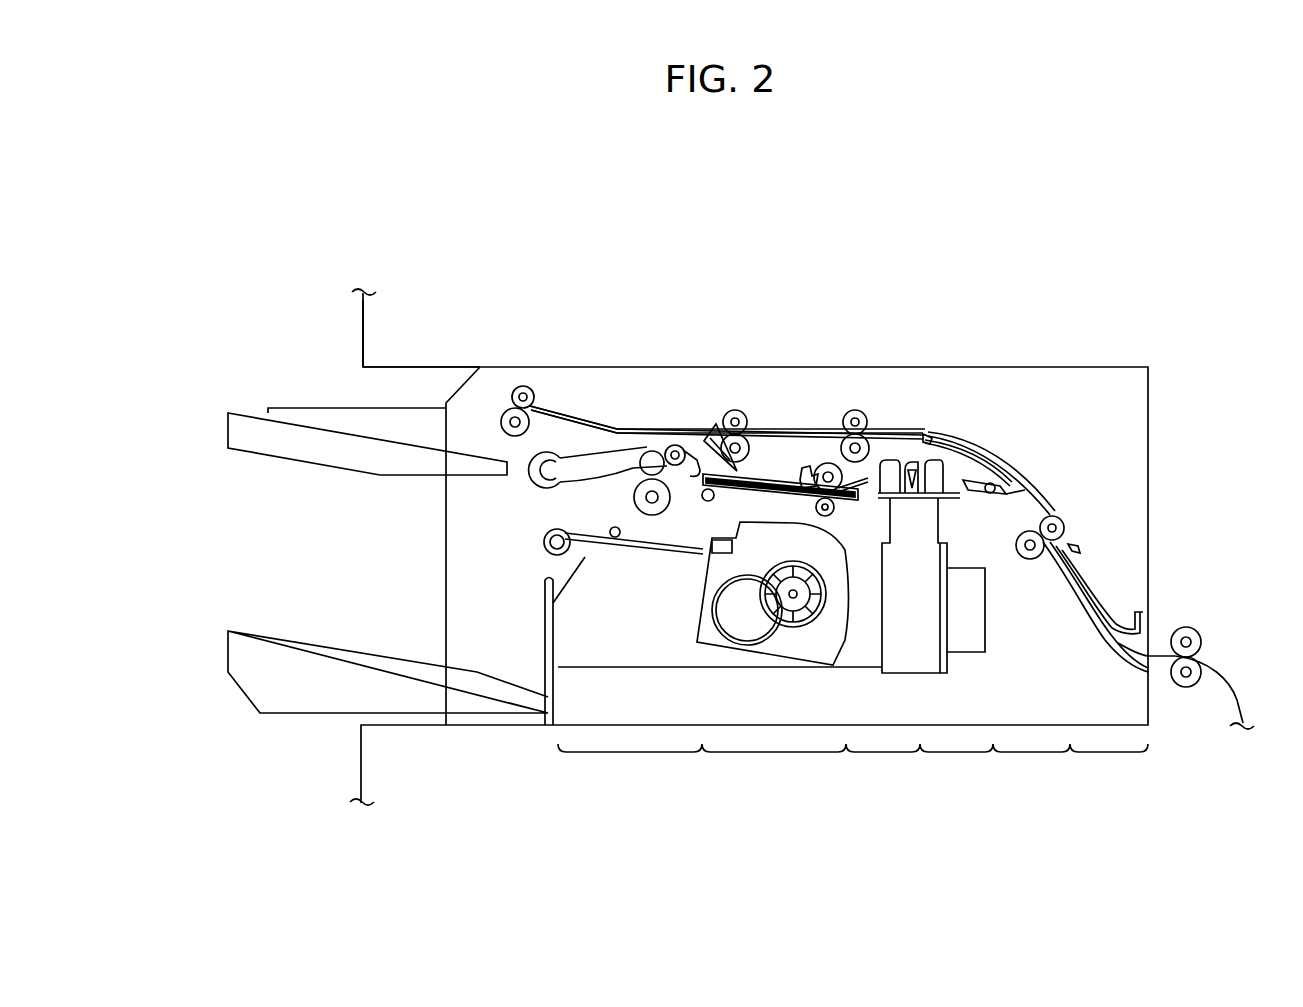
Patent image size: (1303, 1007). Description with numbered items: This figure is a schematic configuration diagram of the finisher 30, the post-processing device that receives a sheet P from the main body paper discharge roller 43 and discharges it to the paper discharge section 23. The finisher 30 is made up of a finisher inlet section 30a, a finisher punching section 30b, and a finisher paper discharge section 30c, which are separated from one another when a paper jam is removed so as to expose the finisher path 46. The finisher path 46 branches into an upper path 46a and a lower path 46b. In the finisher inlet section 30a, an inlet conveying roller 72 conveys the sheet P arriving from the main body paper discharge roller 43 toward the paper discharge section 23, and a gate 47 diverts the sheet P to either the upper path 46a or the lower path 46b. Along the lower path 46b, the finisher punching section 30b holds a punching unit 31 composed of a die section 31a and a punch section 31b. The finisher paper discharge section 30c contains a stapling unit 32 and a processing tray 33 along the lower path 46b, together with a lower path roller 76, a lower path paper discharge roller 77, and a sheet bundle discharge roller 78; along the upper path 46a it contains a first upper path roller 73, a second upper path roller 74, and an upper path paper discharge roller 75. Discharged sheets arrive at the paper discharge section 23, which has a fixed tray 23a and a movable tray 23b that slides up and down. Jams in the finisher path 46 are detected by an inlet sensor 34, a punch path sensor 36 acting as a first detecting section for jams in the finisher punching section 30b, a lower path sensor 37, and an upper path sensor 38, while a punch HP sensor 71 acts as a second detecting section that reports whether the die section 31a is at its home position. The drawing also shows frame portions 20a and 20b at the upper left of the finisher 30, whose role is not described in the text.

The upper frame portion 20a is at (363, 325).
The lower frame portion 20b is at (380, 383).
The paper discharge section 23 is at (326, 548).
The fixed tray 23a is at (255, 415).
The movable tray 23b is at (388, 640).
The finisher 30 is at (446, 576).
The finisher inlet section 30a is at (1070, 767).
The finisher punching section 30b is at (919, 767).
The finisher paper discharge section 30c is at (702, 767).
The punching unit 31 is at (962, 544).
The die section 31a is at (957, 445).
The punch section 31b is at (912, 448).
The stapling unit 32 is at (805, 640).
The processing tray 33 is at (620, 545).
The inlet sensor 34 is at (1080, 548).
The punch path sensor 36 is at (932, 450).
The lower path sensor 37 is at (808, 465).
The upper path sensor 38 is at (712, 420).
The main body paper discharge roller 43 is at (1203, 668).
The finisher path 46 is at (655, 300).
The upper path 46a is at (678, 420).
The lower path 46b is at (765, 473).
The gate 47 is at (1025, 488).
The punch HP sensor 71 is at (893, 458).
The inlet conveying roller 72 is at (1060, 520).
The first upper path roller 73 is at (858, 408).
The second upper path roller 74 is at (733, 408).
The upper path paper discharge roller 75 is at (523, 385).
The lower path roller 76 is at (828, 462).
The lower path paper discharge roller 77 is at (726, 538).
The sheet bundle discharge roller 78 is at (530, 478).
The sheet P is at (1237, 700).